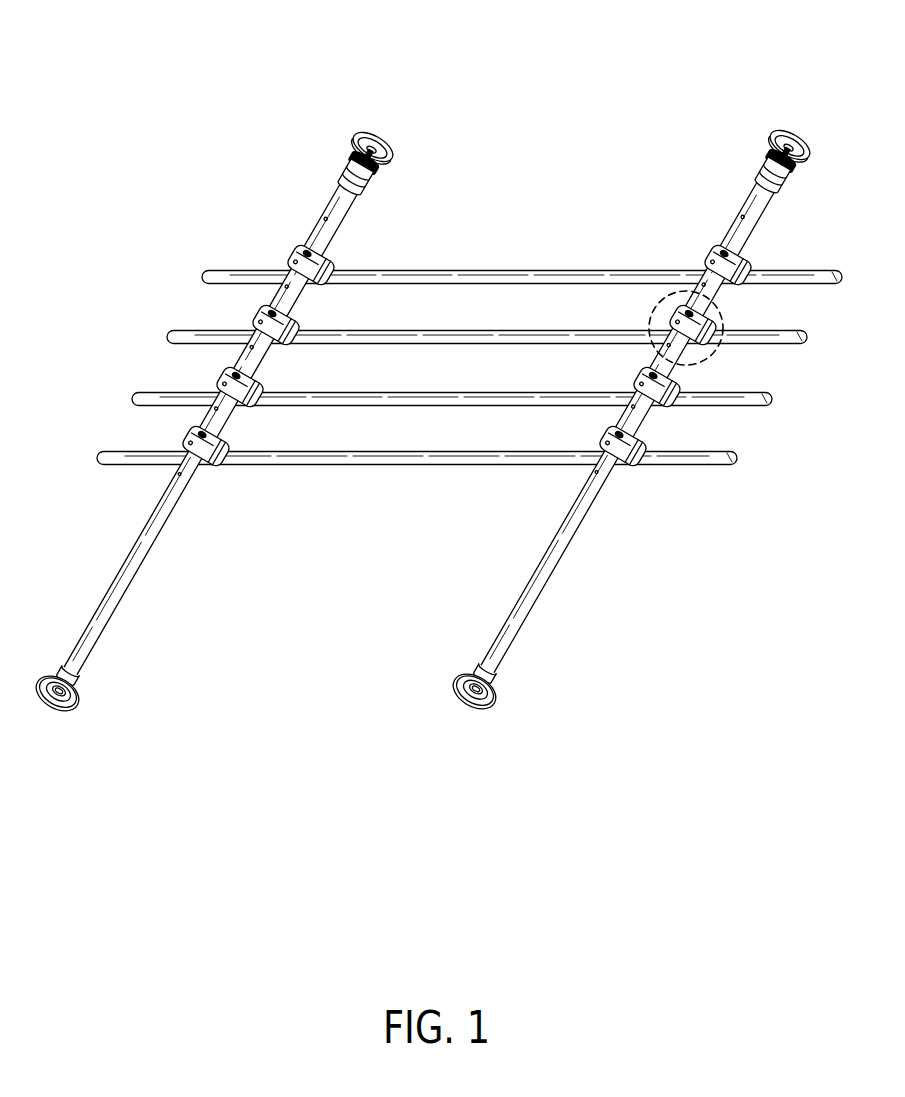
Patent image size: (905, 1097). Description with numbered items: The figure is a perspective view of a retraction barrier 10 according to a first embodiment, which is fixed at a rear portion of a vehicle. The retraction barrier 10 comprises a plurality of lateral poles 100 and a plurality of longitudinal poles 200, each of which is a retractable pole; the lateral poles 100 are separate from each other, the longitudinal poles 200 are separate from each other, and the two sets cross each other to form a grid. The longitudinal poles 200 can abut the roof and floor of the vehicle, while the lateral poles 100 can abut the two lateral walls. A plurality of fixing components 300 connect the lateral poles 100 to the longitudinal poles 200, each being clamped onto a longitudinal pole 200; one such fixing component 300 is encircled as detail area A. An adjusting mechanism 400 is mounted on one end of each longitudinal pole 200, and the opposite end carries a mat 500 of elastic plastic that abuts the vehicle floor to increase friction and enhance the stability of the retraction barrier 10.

The retraction barrier 10 is at (446, 69).
The lateral poles 100 is at (252, 272).
The longitudinal poles 200 is at (217, 407).
The fixing components 300 is at (190, 433).
The adjusting mechanisms 400 is at (352, 165).
The mat 500 is at (72, 684).
The detail area A is at (661, 295).